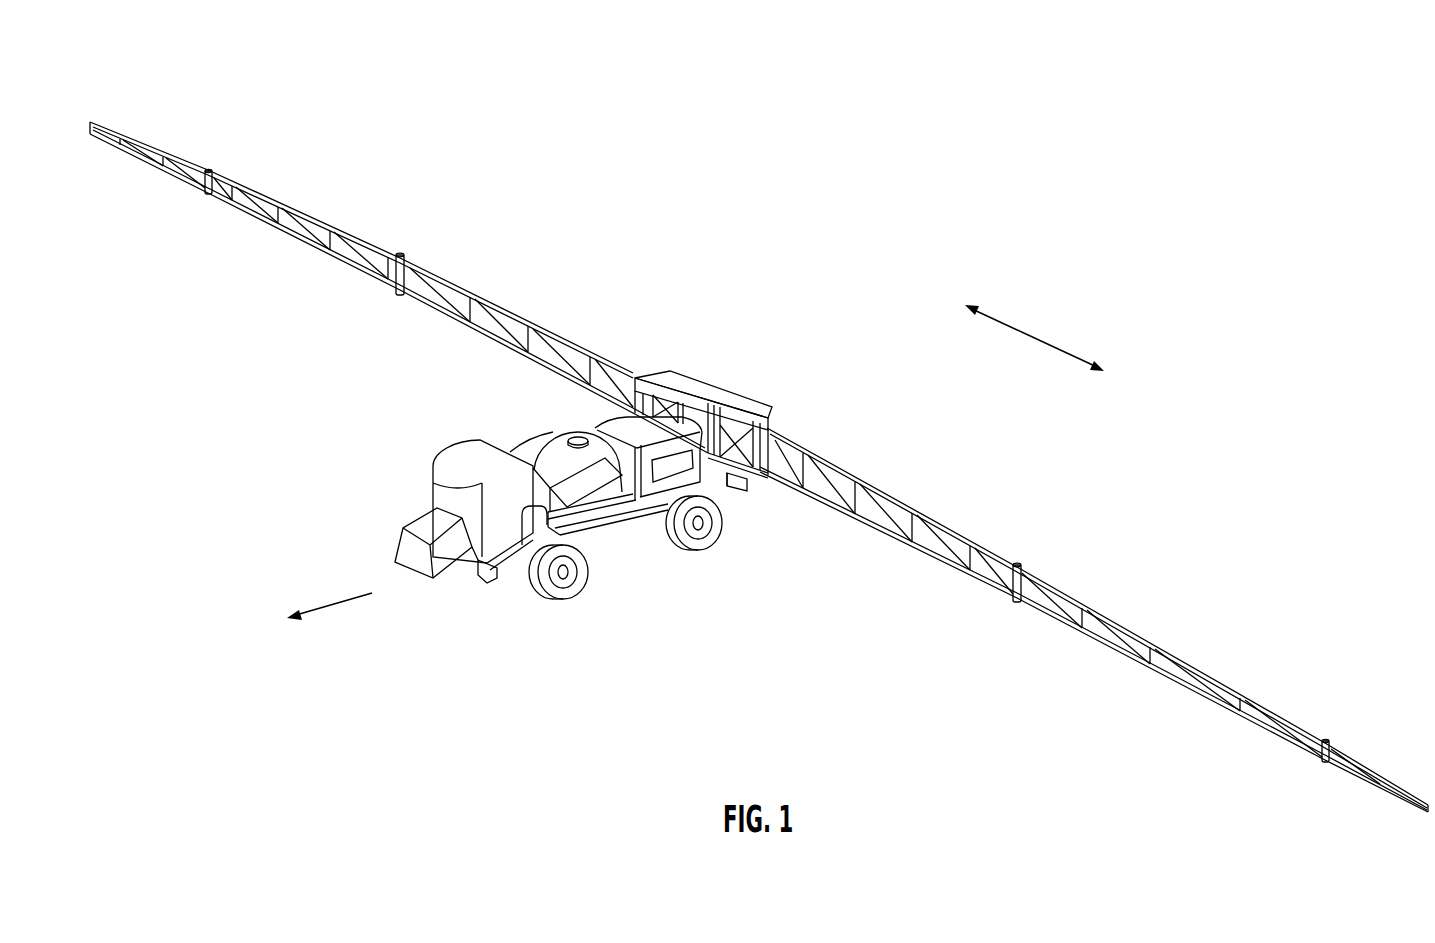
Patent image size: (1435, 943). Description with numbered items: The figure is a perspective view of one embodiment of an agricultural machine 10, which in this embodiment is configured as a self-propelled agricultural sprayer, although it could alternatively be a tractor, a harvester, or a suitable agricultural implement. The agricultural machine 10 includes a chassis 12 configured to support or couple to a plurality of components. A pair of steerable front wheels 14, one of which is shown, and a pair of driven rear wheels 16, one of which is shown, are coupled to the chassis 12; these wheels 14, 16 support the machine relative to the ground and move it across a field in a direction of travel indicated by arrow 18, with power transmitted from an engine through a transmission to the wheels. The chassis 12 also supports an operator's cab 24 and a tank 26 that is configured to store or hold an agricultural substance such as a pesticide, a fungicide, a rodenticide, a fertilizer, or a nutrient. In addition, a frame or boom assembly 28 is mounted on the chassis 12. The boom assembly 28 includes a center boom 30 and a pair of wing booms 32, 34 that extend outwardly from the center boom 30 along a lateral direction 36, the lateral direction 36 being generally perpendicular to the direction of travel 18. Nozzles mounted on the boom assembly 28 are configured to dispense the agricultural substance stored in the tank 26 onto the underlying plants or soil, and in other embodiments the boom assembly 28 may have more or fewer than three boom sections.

The agricultural machine 10 is at (184, 113).
The chassis 12 is at (600, 540).
The front wheels 14 is at (555, 603).
The rear wheels 16 is at (705, 547).
The direction of travel 18 is at (334, 605).
The operator's cab 24 is at (458, 464).
The tank 26 is at (543, 447).
The boom assembly 28 is at (832, 421).
The center boom 30 is at (718, 395).
The wing boom 32 is at (1142, 645).
The wing boom 34 is at (288, 207).
The lateral direction 36 is at (1034, 337).